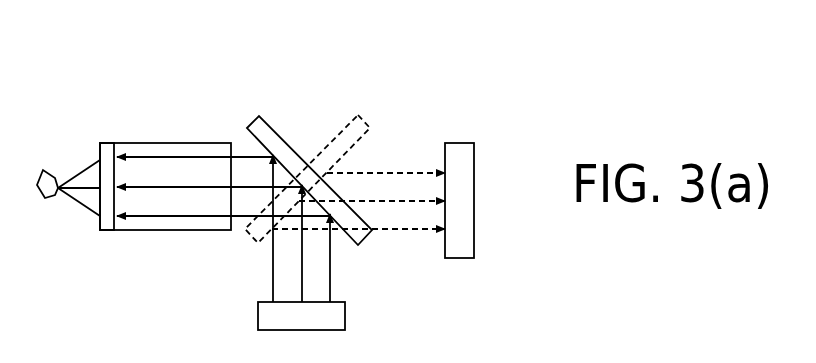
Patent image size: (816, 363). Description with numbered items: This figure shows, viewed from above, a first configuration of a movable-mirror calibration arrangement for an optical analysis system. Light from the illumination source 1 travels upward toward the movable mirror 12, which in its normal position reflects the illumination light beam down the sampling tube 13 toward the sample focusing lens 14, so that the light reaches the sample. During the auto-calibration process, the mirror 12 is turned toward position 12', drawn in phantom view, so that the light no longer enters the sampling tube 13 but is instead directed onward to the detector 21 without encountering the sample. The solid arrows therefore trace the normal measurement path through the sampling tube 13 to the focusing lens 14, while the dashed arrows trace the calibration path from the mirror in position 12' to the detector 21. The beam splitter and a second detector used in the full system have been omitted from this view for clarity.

The light source 1 is at (258, 322).
The movable mirror 12 is at (282, 136).
The calibration position of the movable mirror 12' is at (324, 137).
The sampling tube 13 is at (187, 143).
The sample focusing lens 14 is at (100, 230).
The detector 21 is at (474, 155).